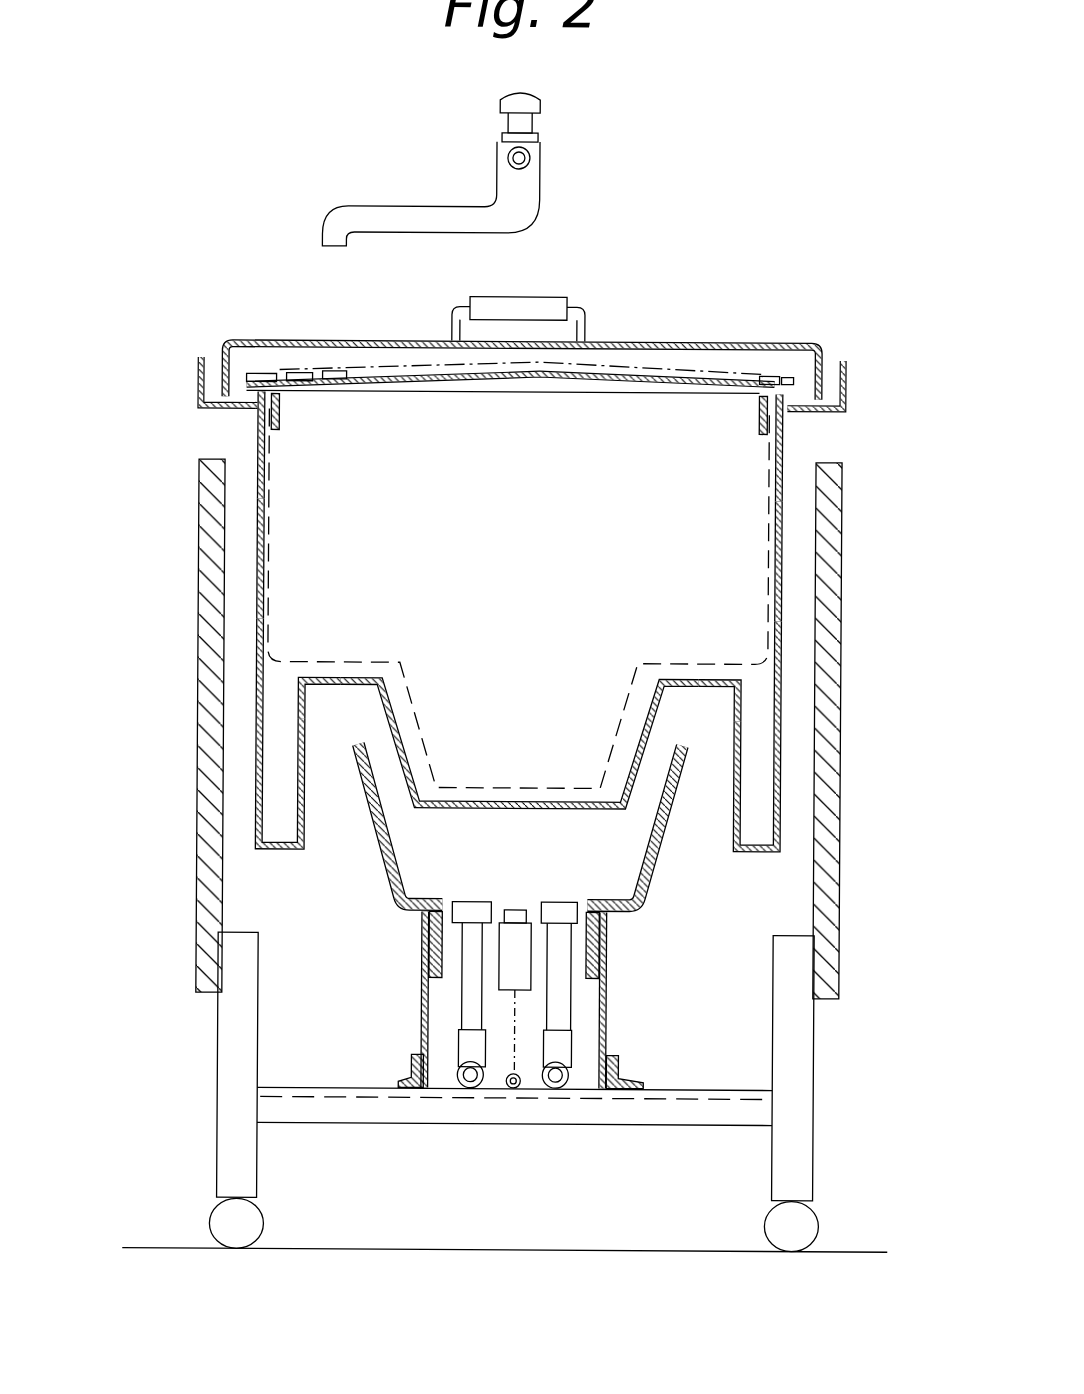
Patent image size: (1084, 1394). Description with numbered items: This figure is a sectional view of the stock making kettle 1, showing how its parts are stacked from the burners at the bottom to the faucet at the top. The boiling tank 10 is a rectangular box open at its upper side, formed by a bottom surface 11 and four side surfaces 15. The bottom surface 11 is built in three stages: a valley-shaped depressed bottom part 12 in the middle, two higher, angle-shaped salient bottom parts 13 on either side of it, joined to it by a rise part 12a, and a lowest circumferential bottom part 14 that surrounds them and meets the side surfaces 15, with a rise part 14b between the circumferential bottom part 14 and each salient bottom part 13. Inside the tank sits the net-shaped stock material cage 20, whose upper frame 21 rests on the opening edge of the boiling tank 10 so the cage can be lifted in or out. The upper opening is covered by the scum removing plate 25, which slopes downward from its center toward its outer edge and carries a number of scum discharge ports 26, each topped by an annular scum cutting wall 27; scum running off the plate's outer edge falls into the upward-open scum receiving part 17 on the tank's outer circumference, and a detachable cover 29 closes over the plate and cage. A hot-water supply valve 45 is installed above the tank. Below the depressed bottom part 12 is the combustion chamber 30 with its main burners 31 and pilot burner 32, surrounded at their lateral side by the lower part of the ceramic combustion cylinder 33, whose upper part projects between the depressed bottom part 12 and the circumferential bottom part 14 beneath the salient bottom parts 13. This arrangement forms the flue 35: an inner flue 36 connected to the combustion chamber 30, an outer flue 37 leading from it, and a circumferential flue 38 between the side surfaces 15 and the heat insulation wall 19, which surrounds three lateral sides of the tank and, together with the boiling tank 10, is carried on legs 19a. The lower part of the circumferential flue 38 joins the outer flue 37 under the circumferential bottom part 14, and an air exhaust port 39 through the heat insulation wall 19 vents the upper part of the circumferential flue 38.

The stock making kettle 1 is at (712, 258).
The boiling tank 10 is at (784, 517).
The bottom surface 11 is at (765, 852).
The depressed bottom part 12 is at (521, 803).
The rise part 12a is at (410, 723).
The salient bottom part 13 is at (362, 688).
The circumferential bottom part 14 is at (269, 852).
The rise part 14b is at (307, 717).
The side surface 15 is at (254, 625).
The scum receiving part 17 is at (230, 415).
The heat insulation wall 19 is at (198, 893).
The leg 19a is at (218, 1143).
The stock material cage 20 is at (269, 488).
The frame 21 is at (279, 413).
The scum removing plate 25 is at (617, 372).
The scum discharge port 26 is at (265, 378).
The scum cutting wall 27 is at (279, 378).
The cover 29 is at (591, 338).
The combustion chamber 30 is at (585, 858).
The main burner 31 is at (455, 912).
The pilot burner 32 is at (512, 957).
The combustion cylinder 33 is at (371, 832).
The flue 35 is at (128, 698).
The inner flue 36 is at (388, 757).
The outer flue 37 is at (330, 805).
The circumferential flue 38 is at (245, 725).
The air exhaust port 39 is at (211, 467).
The hot-water supply valve 45 is at (541, 165).